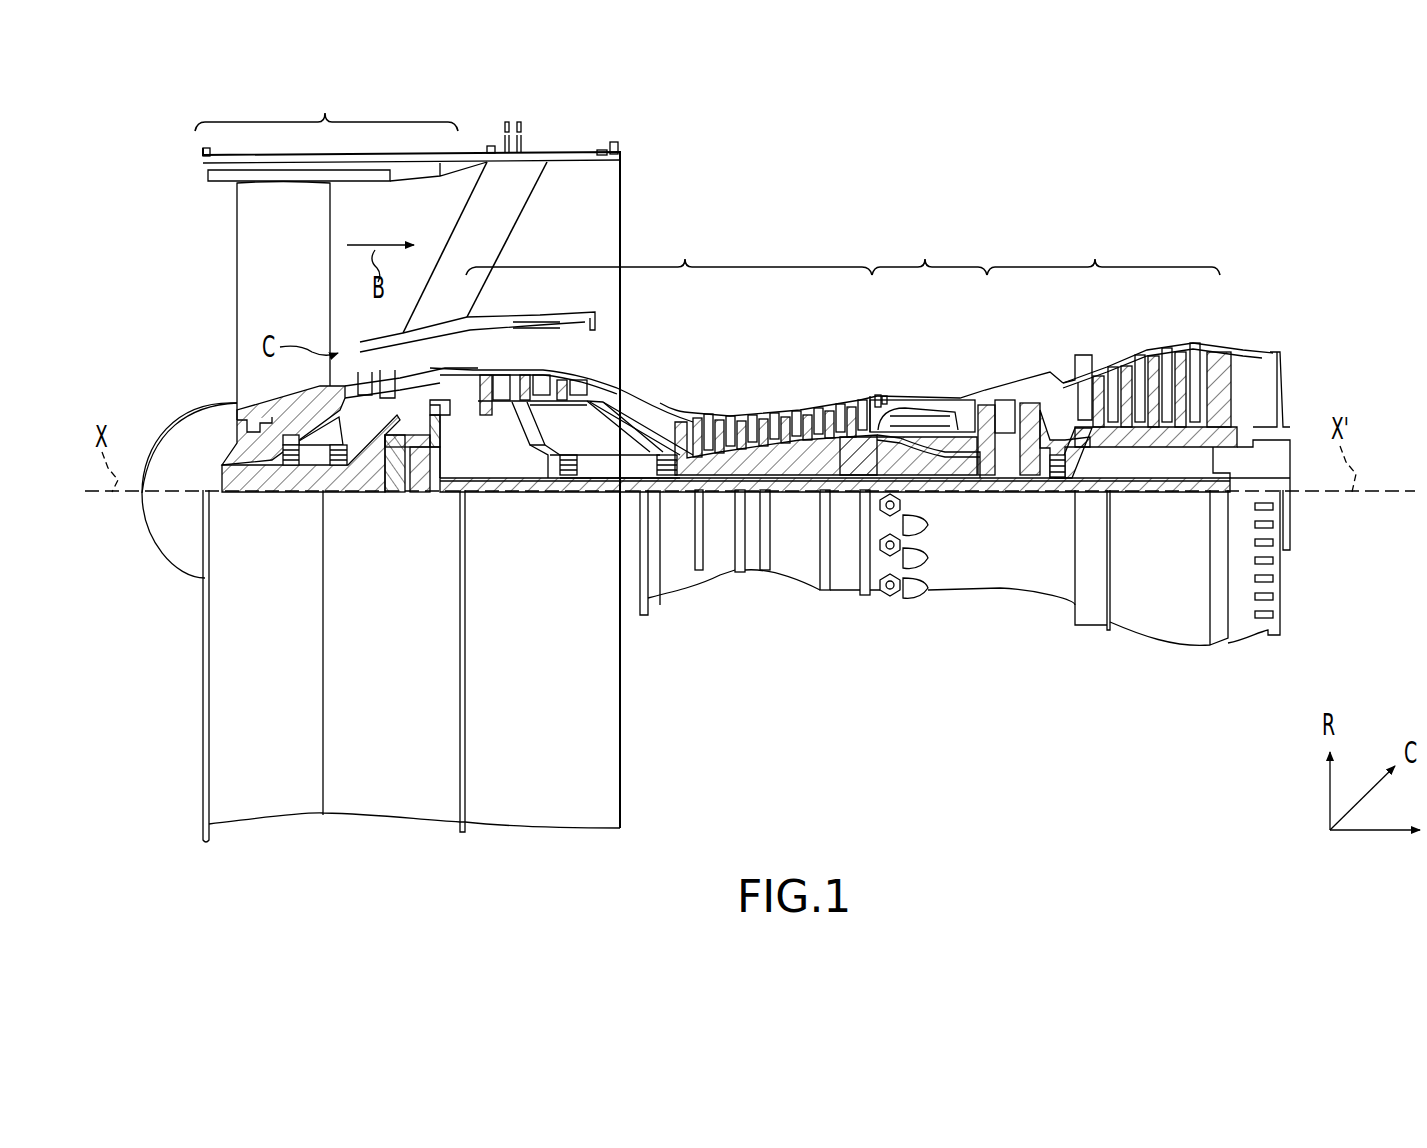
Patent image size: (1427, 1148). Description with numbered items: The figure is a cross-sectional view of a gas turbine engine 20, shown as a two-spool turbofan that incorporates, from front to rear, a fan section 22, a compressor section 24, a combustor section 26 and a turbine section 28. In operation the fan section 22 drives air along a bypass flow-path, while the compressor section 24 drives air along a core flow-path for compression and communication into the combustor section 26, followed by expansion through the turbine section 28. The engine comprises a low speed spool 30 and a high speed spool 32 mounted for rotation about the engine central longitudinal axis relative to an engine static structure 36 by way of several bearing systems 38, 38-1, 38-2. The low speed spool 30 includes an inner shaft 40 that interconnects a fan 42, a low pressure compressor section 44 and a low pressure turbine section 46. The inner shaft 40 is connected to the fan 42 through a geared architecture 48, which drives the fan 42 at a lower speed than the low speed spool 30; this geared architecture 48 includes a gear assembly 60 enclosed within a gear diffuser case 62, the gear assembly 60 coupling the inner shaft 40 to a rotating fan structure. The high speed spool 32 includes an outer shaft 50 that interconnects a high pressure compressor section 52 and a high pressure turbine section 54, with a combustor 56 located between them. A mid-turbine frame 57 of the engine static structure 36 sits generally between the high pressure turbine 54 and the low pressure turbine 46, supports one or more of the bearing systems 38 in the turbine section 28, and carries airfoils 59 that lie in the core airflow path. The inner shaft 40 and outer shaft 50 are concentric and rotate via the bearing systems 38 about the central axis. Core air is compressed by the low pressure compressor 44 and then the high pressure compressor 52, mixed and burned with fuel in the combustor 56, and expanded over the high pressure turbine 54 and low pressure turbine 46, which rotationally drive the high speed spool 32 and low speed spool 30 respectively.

The gas turbine engine 20 is at (990, 196).
The fan section 22 is at (326, 107).
The compressor section 24 is at (669, 250).
The combustor section 26 is at (929, 250).
The turbine section 28 is at (1103, 250).
The low speed spool 30 is at (800, 520).
The high speed spool 32 is at (843, 452).
The engine static structure 36 is at (196, 833).
The bearing system 38 is at (1048, 480).
The bearing system 38-1 is at (296, 475).
The bearing system 38-2 is at (572, 477).
The inner shaft 40 is at (640, 490).
The fan 42 is at (334, 512).
The low pressure compressor section 44 is at (560, 380).
The low pressure turbine section 46 is at (1148, 372).
The geared architecture 48 is at (428, 505).
The outer shaft 50 is at (922, 466).
The high pressure compressor section 52 is at (793, 418).
The high pressure turbine section 54 is at (1003, 400).
The combustor 56 is at (935, 420).
The mid-turbine frame 57 is at (1053, 388).
The airfoils 59 is at (1058, 402).
The gear assembly 60 is at (452, 480).
The gear diffuser case 62 is at (426, 428).